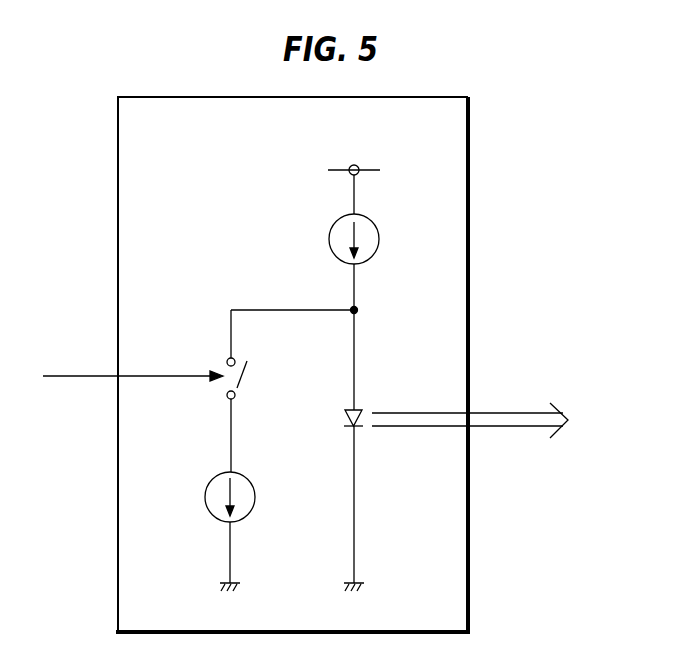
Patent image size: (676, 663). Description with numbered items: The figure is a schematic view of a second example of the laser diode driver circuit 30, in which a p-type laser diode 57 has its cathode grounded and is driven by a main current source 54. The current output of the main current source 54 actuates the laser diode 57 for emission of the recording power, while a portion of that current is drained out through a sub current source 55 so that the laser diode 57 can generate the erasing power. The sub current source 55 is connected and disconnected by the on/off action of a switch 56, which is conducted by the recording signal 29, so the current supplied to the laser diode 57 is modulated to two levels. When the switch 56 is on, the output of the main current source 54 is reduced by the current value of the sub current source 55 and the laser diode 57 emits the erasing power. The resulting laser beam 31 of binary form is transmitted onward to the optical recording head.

The laser diode driver circuit 30 is at (452, 97).
The main current source 54 is at (379, 232).
The sub current source 55 is at (207, 487).
The switch 56 is at (241, 385).
The p-type laser diode 57 is at (359, 409).
The recording signal 29 is at (64, 375).
The laser beam 31 is at (510, 413).